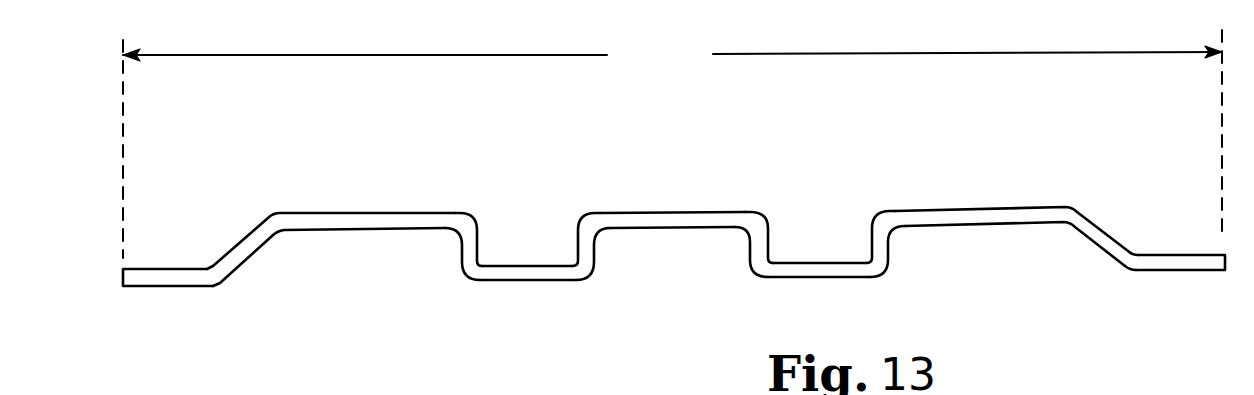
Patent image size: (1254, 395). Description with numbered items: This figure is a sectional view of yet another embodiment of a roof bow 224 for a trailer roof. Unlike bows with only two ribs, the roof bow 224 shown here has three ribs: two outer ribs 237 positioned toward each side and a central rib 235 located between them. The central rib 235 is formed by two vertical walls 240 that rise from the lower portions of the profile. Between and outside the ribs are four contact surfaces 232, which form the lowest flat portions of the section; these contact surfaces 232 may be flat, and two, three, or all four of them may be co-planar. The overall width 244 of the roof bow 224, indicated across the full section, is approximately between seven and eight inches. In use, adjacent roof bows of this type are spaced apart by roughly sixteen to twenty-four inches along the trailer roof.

The roof bow 224 is at (410, 154).
The contact surfaces 232 is at (145, 288).
The central rib 235 is at (709, 218).
The outer ribs 237 is at (412, 221).
The vertical walls 240 is at (586, 247).
The width 244 is at (672, 144).